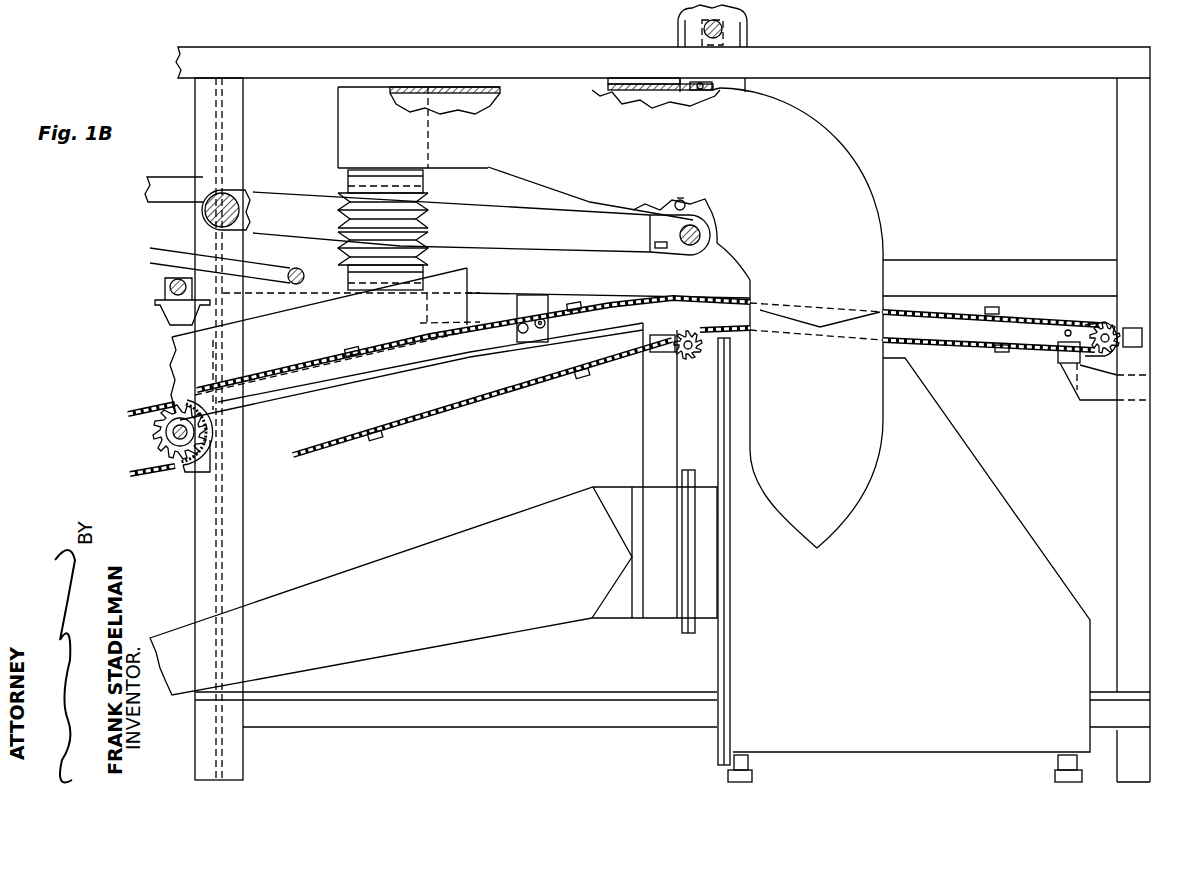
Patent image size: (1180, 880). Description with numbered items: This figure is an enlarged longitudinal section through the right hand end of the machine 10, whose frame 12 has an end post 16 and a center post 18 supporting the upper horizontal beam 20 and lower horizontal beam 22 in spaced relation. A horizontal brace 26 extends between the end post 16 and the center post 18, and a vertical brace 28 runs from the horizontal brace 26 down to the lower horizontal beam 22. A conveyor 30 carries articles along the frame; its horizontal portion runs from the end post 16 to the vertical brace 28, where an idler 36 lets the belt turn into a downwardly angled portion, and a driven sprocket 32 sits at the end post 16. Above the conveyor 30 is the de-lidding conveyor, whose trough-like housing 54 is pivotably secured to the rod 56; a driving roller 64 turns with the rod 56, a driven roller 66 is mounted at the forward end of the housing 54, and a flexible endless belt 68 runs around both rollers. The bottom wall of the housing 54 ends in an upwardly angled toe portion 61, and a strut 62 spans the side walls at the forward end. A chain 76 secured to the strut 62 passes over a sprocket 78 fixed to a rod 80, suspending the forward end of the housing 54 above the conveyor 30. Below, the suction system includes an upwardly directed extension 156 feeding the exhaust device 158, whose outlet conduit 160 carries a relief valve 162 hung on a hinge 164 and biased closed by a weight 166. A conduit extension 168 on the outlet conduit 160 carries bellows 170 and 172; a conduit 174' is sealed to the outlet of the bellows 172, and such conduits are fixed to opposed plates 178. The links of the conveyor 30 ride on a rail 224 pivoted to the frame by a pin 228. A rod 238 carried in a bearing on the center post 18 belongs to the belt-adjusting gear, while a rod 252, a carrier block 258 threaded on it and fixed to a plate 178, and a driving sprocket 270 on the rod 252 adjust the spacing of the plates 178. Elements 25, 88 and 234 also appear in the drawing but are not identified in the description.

The machine 10 is at (677, 397).
The frame 12 is at (1135, 115).
The end post 16 is at (1125, 520).
The center post 18 is at (230, 547).
The upper horizontal beam 20 is at (498, 64).
The lower horizontal beam 22 is at (572, 715).
The bar 25 is at (173, 185).
The horizontal brace 26 is at (1008, 270).
The vertical brace 28 is at (655, 433).
The conveyor 30 is at (458, 405).
The driven sprocket 32 is at (1105, 325).
The idler 36 is at (690, 358).
The trough-like housing 54 is at (560, 215).
The rod 56 is at (205, 210).
The toe portion 61 is at (652, 244).
The strut 62 is at (714, 219).
The driving roller 64 is at (250, 190).
The driven roller 66 is at (700, 238).
The flexible endless belt 68 is at (688, 252).
The chain 76 is at (690, 205).
The sprocket 78 is at (693, 35).
The rod 80 is at (723, 30).
The rod 88 is at (305, 275).
The upwardly directed extension 156 is at (490, 518).
The exhaust device 158 is at (980, 495).
The outlet conduit 160 is at (846, 191).
The relief valve 162 is at (648, 92).
The hinge 164 is at (712, 93).
The weight 166 is at (622, 80).
The conduit extension 168 is at (418, 100).
The bellows 170 is at (415, 210).
The bellows 172 is at (367, 250).
The conduit 174' is at (461, 331).
The plates 178 is at (180, 357).
The rail 224 is at (340, 368).
The pin 228 is at (523, 335).
The chain 234 is at (142, 407).
The rod 238 is at (170, 286).
The rod 252 is at (168, 436).
The carrier block 258 is at (193, 425).
The driving sprocket 270 is at (183, 450).